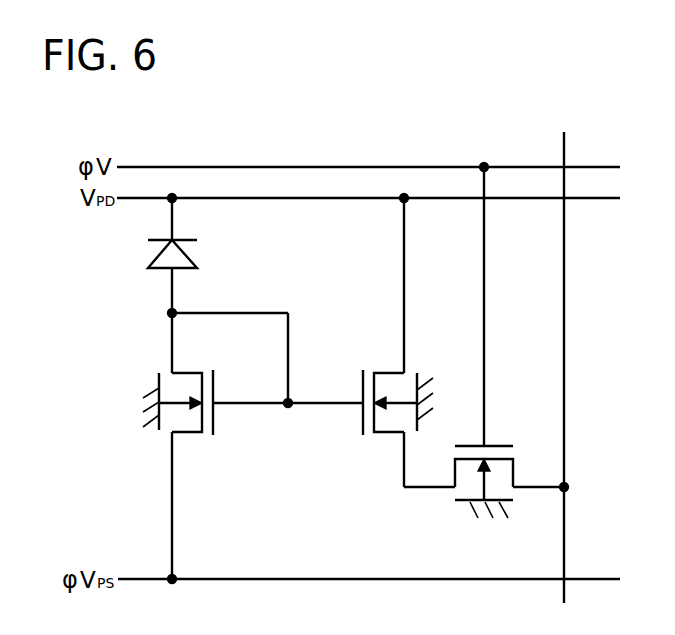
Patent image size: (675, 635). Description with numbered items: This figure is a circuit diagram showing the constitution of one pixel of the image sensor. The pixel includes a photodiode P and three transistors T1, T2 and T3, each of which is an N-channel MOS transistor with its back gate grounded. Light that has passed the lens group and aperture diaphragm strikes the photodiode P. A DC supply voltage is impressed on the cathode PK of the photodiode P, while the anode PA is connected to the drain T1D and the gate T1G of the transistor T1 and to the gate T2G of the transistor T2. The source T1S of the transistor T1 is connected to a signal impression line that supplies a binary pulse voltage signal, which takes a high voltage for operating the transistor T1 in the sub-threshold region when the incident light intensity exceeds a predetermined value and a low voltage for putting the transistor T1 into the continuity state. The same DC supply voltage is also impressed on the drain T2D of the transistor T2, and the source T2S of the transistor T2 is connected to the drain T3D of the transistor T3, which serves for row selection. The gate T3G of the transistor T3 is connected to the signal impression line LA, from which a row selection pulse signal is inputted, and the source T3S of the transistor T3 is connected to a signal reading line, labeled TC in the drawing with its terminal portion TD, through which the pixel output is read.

The photodiode P is at (210, 248).
The cathode PK is at (172, 219).
The anode PA is at (172, 293).
The transistor T1 is at (205, 445).
The drain T1D is at (172, 339).
The gate T1G is at (243, 402).
The source T1S is at (172, 491).
The transistor T2 is at (419, 364).
The drain T2D is at (404, 291).
The gate T2G is at (325, 402).
The source T2S is at (404, 461).
The transistor for row selection T3 is at (500, 432).
The drain T3D is at (430, 489).
The gate T3G is at (484, 395).
The source T3S is at (538, 489).
The signal impression line LA is at (598, 166).
The signal line TC is at (595, 577).
The signal line terminal TD is at (566, 593).